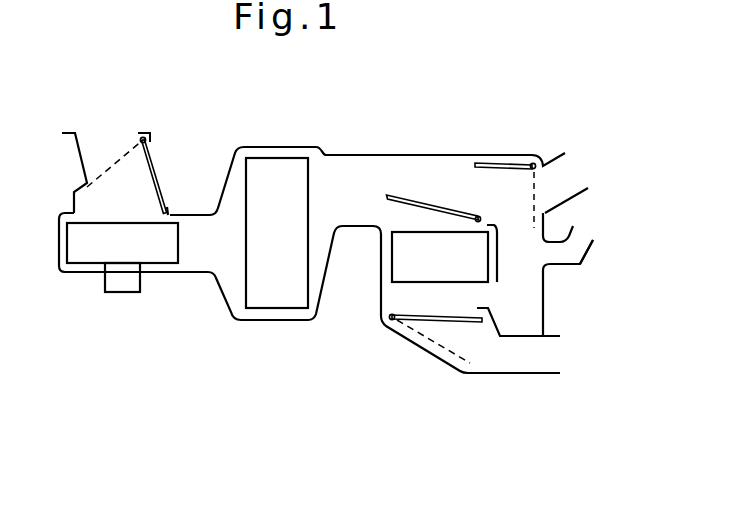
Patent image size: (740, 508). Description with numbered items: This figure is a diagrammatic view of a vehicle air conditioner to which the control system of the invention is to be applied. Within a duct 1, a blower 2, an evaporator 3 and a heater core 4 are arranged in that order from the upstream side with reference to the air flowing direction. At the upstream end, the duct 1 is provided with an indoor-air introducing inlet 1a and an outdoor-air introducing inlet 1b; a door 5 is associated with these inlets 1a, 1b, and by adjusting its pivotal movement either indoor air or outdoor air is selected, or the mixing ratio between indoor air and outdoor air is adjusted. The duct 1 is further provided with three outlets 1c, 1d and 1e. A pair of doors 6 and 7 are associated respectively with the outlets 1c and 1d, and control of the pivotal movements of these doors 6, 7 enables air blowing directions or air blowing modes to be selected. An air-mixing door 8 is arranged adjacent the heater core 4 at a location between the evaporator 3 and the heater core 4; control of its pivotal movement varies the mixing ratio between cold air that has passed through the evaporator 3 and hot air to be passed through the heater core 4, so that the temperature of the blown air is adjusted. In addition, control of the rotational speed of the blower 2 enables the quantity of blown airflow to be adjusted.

The duct 1 is at (370, 153).
The indoor-air introducing inlet 1a is at (157, 150).
The outdoor-air introducing inlet 1b is at (102, 132).
The outlet 1c is at (570, 180).
The outlet 1d is at (558, 352).
The outlet 1e is at (582, 237).
The blower 2 is at (165, 256).
The evaporator 3 is at (272, 298).
The heater core 4 is at (398, 267).
The door 5 is at (160, 188).
The door 6 is at (505, 163).
The door 7 is at (442, 320).
The air-mixing door 8 is at (443, 205).